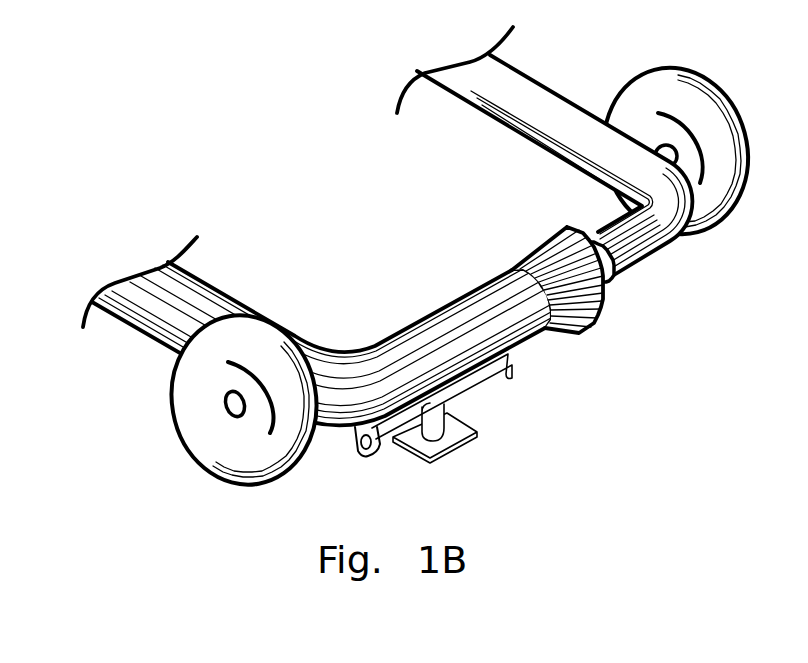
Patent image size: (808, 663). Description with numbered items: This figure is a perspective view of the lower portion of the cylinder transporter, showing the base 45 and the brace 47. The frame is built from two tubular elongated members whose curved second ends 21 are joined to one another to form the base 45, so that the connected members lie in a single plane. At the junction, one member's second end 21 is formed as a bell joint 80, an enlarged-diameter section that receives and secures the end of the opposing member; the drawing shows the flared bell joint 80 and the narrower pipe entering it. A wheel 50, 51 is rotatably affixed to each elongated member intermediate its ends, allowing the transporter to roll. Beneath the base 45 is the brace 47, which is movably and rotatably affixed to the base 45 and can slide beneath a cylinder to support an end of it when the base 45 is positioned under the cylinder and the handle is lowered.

The second end 21 is at (576, 234).
The base 45 is at (647, 262).
The brace 47 is at (359, 482).
The wheel 50 is at (215, 447).
The wheel 51 is at (698, 75).
The bell joint 80 is at (513, 261).